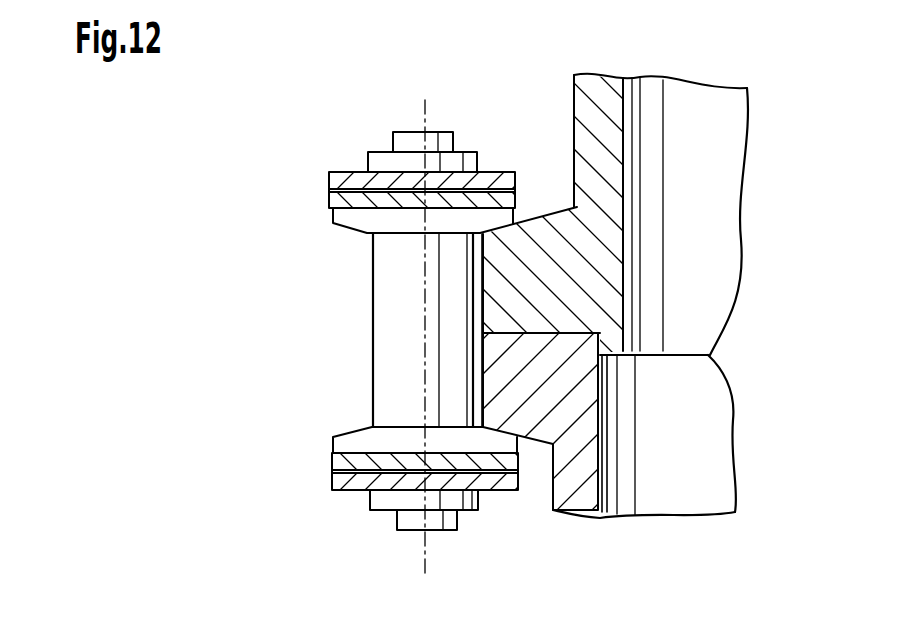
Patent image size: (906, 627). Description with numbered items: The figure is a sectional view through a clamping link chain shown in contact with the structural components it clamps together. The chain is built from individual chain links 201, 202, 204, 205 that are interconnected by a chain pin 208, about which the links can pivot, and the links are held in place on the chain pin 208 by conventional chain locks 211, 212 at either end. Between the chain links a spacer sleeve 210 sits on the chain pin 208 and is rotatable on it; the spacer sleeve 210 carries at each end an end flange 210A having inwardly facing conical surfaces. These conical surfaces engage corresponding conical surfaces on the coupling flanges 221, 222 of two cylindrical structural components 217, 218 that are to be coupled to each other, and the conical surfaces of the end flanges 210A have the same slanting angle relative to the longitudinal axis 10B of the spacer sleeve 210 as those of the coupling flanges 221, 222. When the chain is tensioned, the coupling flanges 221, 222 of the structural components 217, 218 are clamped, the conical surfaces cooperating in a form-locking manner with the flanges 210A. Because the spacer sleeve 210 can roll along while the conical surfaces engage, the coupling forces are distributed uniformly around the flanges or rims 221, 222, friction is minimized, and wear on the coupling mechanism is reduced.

The chain link 201 is at (332, 173).
The chain link 202 is at (332, 197).
The chain link 204 is at (332, 493).
The chain link 205 is at (333, 457).
The chain pin 208 is at (395, 132).
The spacer sleeve 210 is at (377, 322).
The end flange 210A is at (353, 222).
The chain lock 211 is at (465, 153).
The chain lock 212 is at (390, 502).
The cylindrical structural component 217 is at (613, 163).
The cylindrical structural component 218 is at (590, 448).
The coupling flange 221 is at (540, 226).
The coupling flange 222 is at (531, 418).
The longitudinal axis 10B is at (428, 567).